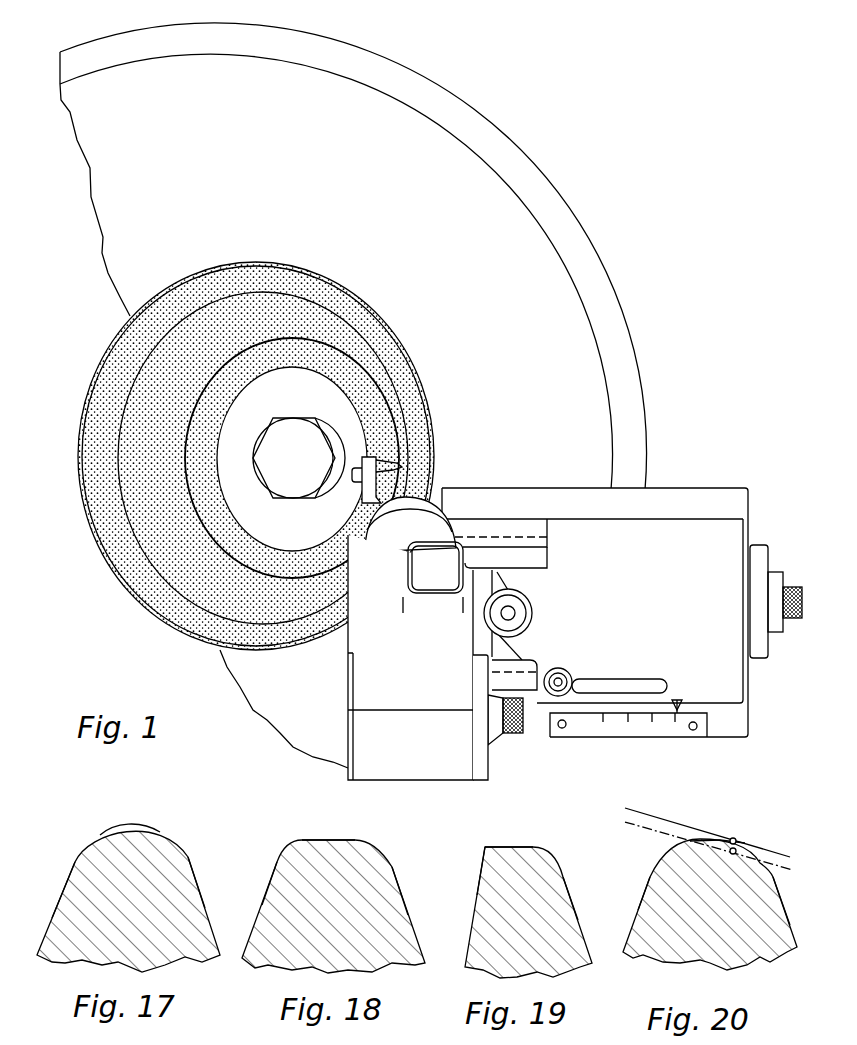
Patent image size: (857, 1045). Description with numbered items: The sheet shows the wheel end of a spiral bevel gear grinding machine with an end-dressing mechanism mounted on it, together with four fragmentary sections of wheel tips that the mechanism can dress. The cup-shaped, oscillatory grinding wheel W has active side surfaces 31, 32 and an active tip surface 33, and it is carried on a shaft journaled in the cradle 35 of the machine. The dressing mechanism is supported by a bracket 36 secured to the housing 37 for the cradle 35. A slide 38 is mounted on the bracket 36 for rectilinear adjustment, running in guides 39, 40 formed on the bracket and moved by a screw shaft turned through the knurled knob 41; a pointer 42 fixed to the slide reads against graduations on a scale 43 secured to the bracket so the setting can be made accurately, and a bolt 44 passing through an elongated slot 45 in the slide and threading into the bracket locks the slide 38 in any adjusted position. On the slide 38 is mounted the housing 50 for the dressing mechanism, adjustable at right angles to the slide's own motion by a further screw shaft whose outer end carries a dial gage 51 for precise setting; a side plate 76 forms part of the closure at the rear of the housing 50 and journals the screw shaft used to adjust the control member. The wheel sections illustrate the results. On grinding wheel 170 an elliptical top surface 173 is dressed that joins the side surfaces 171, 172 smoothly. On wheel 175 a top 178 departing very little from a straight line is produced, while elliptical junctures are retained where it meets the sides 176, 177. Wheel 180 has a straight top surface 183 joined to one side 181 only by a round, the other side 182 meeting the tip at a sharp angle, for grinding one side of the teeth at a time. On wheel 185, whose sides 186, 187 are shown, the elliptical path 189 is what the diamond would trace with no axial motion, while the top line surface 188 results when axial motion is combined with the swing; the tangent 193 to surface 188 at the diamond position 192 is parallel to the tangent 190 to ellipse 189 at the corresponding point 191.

In FIG. 1, the grinding wheel W is at (418, 402).
In FIG. 1, the active side surface 31 is at (427, 448).
In FIG. 1, the active side surface 32 is at (366, 466).
In FIG. 1, the active tip surface 33 is at (268, 456).
In FIG. 1, the cradle 35 is at (268, 707).
In FIG. 1, the bracket 36 is at (695, 503).
In FIG. 1, the housing 37 is at (635, 440).
In FIG. 1, the slide 38 is at (733, 678).
In FIG. 1, the guide 39 is at (477, 530).
In FIG. 1, the guide 40 is at (524, 682).
In FIG. 1, the knurled knob 41 is at (790, 583).
In FIG. 1, the pointer 42 is at (678, 704).
In FIG. 1, the scale 43 is at (635, 732).
In FIG. 1, the bolt 44 is at (567, 677).
In FIG. 1, the elongated slot 45 is at (638, 680).
In FIG. 1, the housing 50 is at (433, 770).
In FIG. 1, the dial gage 51 is at (533, 608).
In FIG. 1, the side plate 76 is at (482, 767).
In FIG. 17, the grinding wheel 170 is at (72, 915).
In FIG. 17, the side surface 171 is at (200, 882).
In FIG. 17, the side surface 172 is at (67, 880).
In FIG. 17, the elliptical top surface 173 is at (150, 827).
In FIG. 18, the grinding wheel 175 is at (268, 927).
In FIG. 18, the side 176 is at (402, 880).
In FIG. 18, the side 177 is at (262, 900).
In FIG. 18, the top 178 is at (338, 840).
In FIG. 19, the wheel 180 is at (482, 932).
In FIG. 19, the side 181 is at (568, 885).
In FIG. 19, the other side 182 is at (477, 903).
In FIG. 19, the straight top surface 183 is at (520, 845).
In FIG. 20, the wheel 185 is at (653, 930).
In FIG. 20, the right side face 186 is at (780, 897).
In FIG. 20, the left side face 187 is at (638, 902).
In FIG. 20, the top line surface 188 is at (727, 840).
In FIG. 20, the elliptical path 189 is at (707, 837).
In FIG. 20, the tangent 190 is at (680, 823).
In FIG. 20, the point 191 is at (740, 838).
In FIG. 20, the position of the diamond point 192 is at (740, 850).
In FIG. 20, the tangent 193 is at (643, 825).